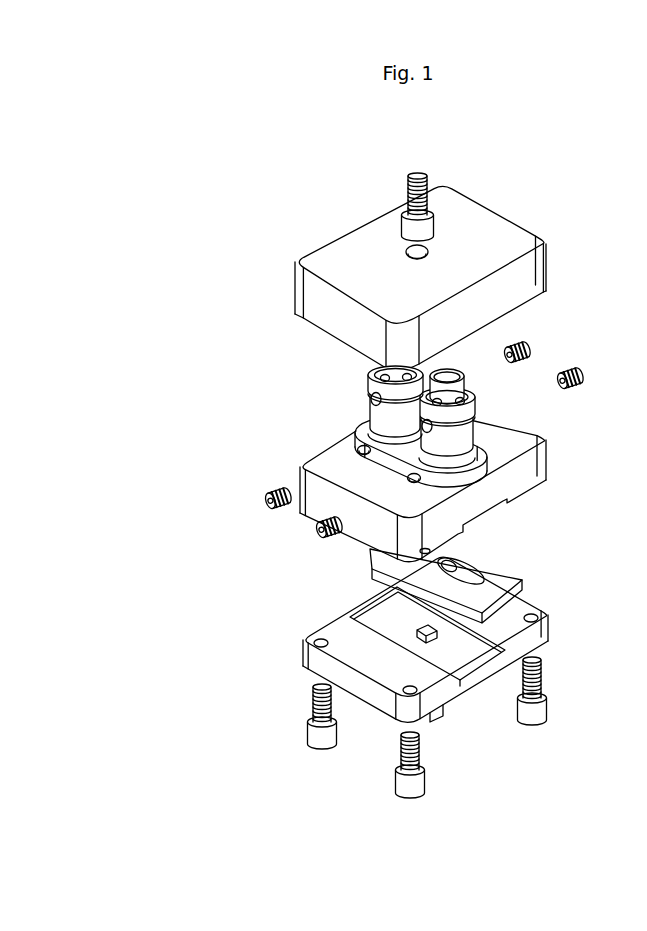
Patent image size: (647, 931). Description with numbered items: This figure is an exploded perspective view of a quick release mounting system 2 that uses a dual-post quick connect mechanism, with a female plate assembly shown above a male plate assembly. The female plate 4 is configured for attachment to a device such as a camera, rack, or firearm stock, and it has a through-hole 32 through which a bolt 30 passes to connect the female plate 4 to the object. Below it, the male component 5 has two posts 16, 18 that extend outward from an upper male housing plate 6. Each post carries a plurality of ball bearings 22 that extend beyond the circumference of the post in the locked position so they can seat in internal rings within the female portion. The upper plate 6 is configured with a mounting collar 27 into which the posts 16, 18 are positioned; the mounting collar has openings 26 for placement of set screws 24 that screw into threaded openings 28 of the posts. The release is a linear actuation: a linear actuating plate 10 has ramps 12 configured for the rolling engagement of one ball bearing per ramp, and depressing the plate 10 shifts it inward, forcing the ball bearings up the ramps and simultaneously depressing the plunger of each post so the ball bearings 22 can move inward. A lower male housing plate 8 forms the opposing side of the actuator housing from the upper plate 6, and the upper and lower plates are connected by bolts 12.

The wafer holder assembly 2 is at (192, 270).
The female plate 4 is at (312, 253).
The male component 5 is at (210, 747).
The upper male housing plate 6 is at (300, 466).
The lower male housing plate 8 is at (462, 710).
The linear actuating plate 10 is at (525, 586).
The ramps 12 is at (427, 553).
The post 16 is at (368, 385).
The post 18 is at (472, 405).
The ball bearings 22 is at (378, 370).
The set screws 24 is at (319, 532).
The openings 26 is at (358, 449).
The boss 27 is at (488, 466).
The threaded openings 28 is at (370, 399).
The bolt 30 is at (407, 175).
The through-hole 32 is at (428, 250).